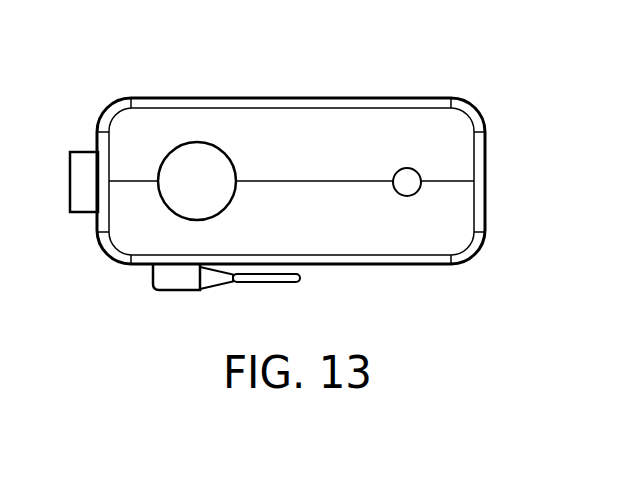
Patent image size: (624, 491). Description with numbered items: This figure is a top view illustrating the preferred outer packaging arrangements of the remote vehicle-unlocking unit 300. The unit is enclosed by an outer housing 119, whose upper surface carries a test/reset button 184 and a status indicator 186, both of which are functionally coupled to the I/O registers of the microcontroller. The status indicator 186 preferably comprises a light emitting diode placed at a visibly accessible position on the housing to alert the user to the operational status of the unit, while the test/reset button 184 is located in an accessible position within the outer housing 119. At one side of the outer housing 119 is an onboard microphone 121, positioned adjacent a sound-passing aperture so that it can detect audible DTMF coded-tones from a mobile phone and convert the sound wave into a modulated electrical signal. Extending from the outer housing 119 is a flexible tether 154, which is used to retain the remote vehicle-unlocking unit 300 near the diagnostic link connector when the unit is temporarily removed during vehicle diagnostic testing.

The outer housing 119 is at (484, 103).
The onboard microphone 121 is at (70, 172).
The flexible tether 154 is at (180, 290).
The test/reset button 184 is at (210, 145).
The status indicator 186 is at (414, 194).
The remote vehicle-unlocking unit 300 is at (102, 272).